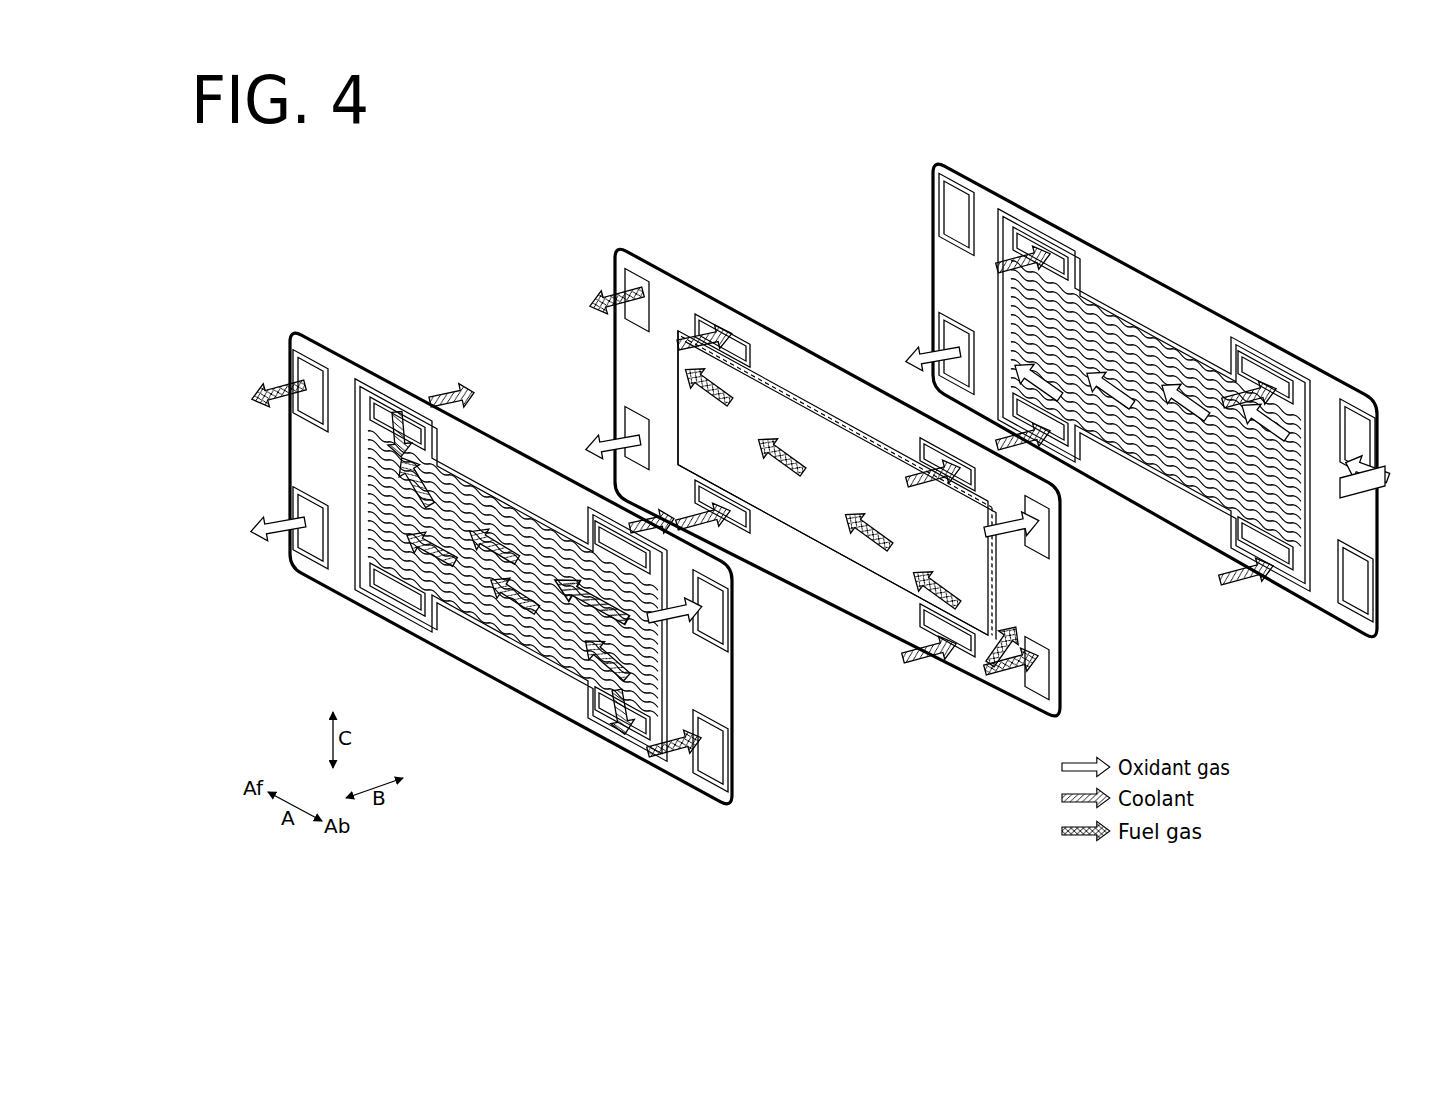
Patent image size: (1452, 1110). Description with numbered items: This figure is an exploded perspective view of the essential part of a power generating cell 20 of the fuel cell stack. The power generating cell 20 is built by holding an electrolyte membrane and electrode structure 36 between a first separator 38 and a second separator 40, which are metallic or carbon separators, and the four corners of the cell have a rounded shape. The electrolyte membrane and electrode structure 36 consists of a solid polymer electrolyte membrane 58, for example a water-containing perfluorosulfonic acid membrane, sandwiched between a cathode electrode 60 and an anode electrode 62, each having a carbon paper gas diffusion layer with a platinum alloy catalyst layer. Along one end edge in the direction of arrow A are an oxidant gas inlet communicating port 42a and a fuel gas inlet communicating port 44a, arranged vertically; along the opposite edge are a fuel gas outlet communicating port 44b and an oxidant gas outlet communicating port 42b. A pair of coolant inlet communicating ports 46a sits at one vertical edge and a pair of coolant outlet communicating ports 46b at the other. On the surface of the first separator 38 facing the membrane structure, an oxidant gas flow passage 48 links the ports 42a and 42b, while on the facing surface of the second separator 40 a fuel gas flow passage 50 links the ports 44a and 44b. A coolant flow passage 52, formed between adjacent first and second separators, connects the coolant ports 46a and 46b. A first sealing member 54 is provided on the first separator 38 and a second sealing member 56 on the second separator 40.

The power generating cell 20 is at (436, 265).
The electrolyte membrane and electrode structure 36 is at (632, 244).
The first separator 38 is at (987, 176).
The second separator 40 is at (307, 328).
The oxidant gas inlet communicating port 42a is at (735, 626).
The oxidant gas outlet communicating port 42b is at (320, 590).
The fuel gas inlet communicating port 44a is at (734, 765).
The fuel gas outlet communicating port 44b is at (310, 378).
The coolant inlet communicating port 46a is at (615, 716).
The coolant outlet communicating port 46b is at (386, 408).
The oxidant gas flow passage 48 is at (1130, 452).
The fuel gas flow passage 50 is at (455, 490).
The coolant flow passage 52 is at (495, 600).
The first sealing member 54 is at (1100, 287).
The second sealing member 56 is at (402, 383).
The solid polymer electrolyte membrane 58 is at (1036, 710).
The cathode electrode 60 is at (800, 400).
The anode electrode 62 is at (880, 600).